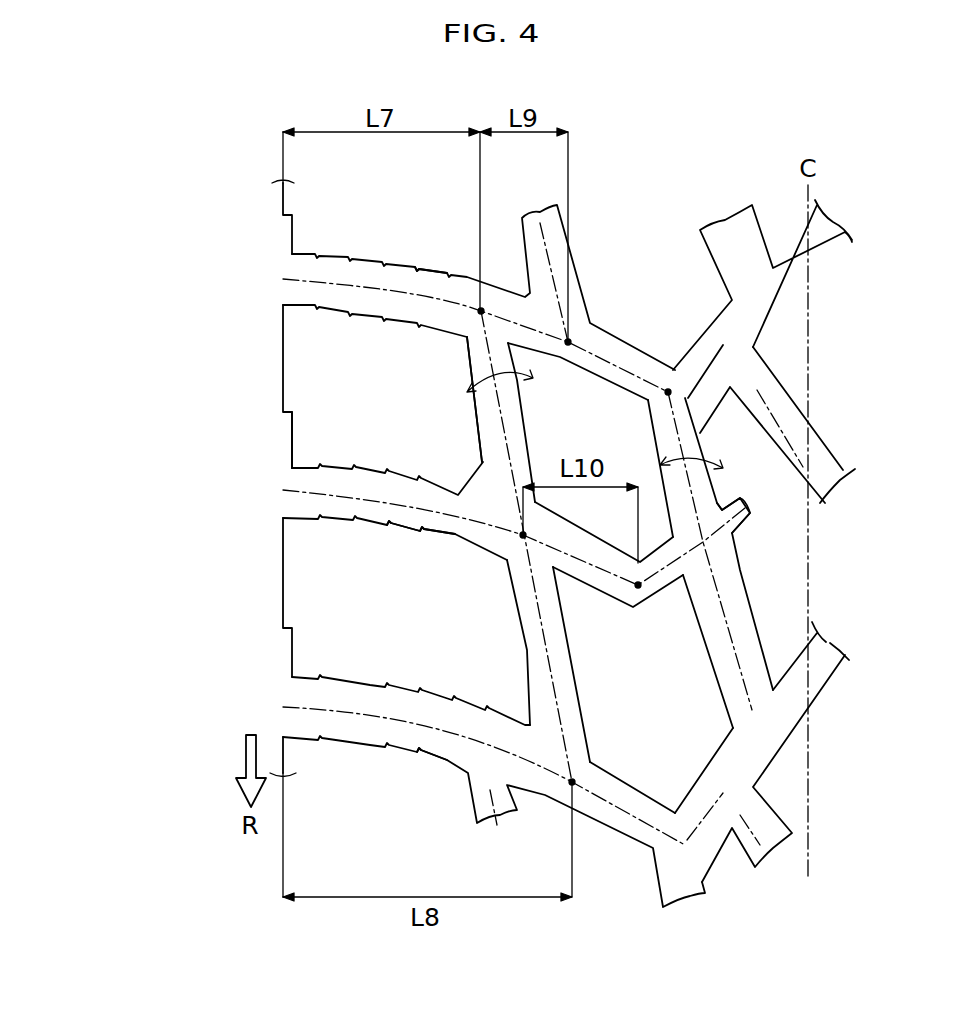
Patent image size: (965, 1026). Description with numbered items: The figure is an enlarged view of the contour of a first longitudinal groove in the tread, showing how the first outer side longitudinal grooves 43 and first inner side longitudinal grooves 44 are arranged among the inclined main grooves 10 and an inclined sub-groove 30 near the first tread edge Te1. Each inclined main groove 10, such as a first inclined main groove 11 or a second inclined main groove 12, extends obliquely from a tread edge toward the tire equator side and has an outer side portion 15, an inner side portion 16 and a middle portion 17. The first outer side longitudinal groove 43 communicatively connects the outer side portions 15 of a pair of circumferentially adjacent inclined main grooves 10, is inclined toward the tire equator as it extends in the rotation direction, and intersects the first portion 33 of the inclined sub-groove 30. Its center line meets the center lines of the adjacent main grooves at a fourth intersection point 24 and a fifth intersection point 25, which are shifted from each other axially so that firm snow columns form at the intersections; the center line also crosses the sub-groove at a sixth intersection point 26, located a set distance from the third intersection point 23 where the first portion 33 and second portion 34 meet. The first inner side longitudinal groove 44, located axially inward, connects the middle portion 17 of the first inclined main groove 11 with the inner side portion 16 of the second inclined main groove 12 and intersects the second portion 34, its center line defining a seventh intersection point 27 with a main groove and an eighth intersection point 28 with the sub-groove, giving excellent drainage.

The inclined main groove 10 is at (367, 705).
The first inclined main groove 11 is at (355, 278).
The second inclined main groove 12 is at (826, 644).
The outer side portion 15 is at (455, 282).
The inner side portion 16 is at (797, 711).
The middle portion 17 is at (755, 347).
The third intersection point 23 is at (640, 588).
The fourth intersection point 24 is at (481, 311).
The fifth intersection point 25 is at (568, 342).
The sixth intersection point 26 is at (523, 535).
The seventh intersection point 27 is at (668, 392).
The eighth intersection point 28 is at (703, 542).
The inclined sub-groove 30 is at (357, 492).
The first portion 33 is at (397, 517).
The second portion 34 is at (675, 588).
The first outer side longitudinal groove 43 is at (477, 428).
The first inner side longitudinal groove 44 is at (716, 493).
The first tread edge Te1 is at (272, 362).